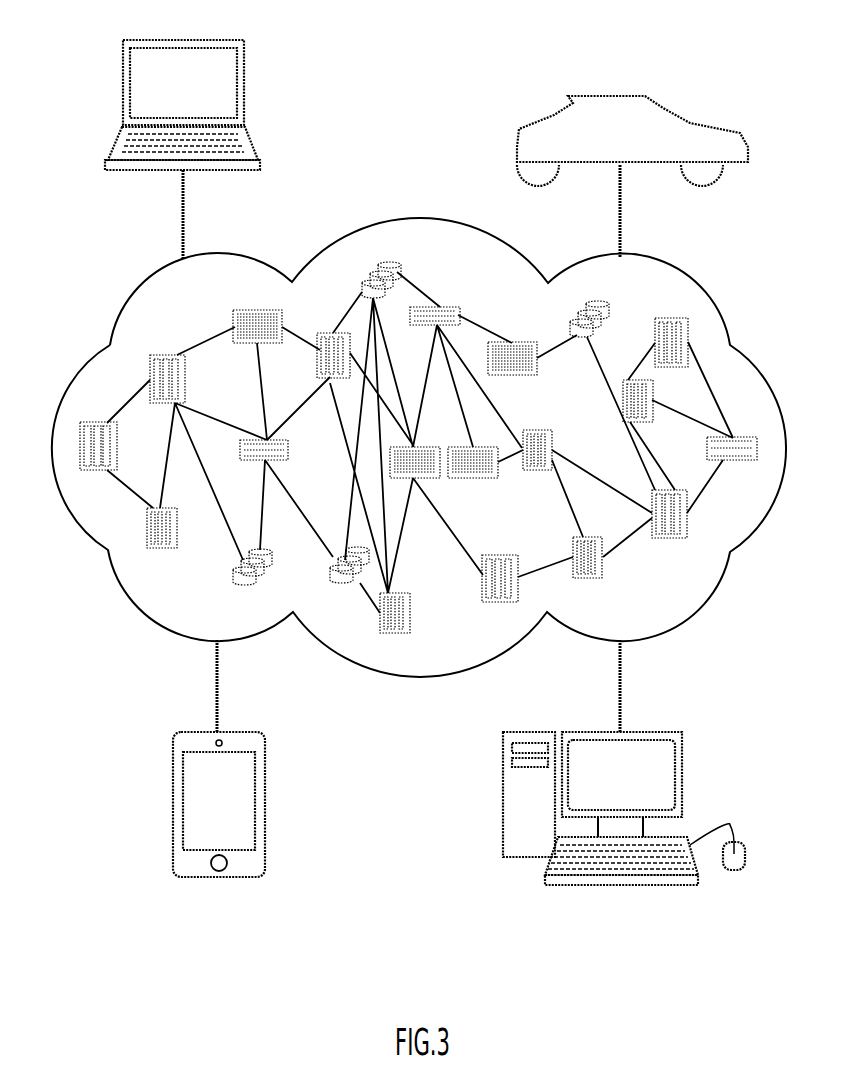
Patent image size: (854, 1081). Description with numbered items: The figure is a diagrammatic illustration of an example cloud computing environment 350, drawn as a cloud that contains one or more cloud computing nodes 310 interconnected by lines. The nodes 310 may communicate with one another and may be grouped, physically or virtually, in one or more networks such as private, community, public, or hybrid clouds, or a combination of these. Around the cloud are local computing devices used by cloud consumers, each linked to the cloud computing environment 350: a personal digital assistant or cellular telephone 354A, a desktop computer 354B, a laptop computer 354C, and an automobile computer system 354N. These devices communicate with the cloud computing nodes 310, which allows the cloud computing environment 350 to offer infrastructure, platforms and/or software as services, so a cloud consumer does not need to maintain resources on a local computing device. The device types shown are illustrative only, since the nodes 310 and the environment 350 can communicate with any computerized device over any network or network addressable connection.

The personal digital assistant or cellular telephone 354A is at (265, 787).
The desktop computer 354B is at (682, 750).
The laptop computer 354C is at (245, 85).
The automobile computer system 354N is at (585, 95).
The cloud computing environment 350 is at (763, 370).
The cloud computing nodes 310 is at (747, 485).